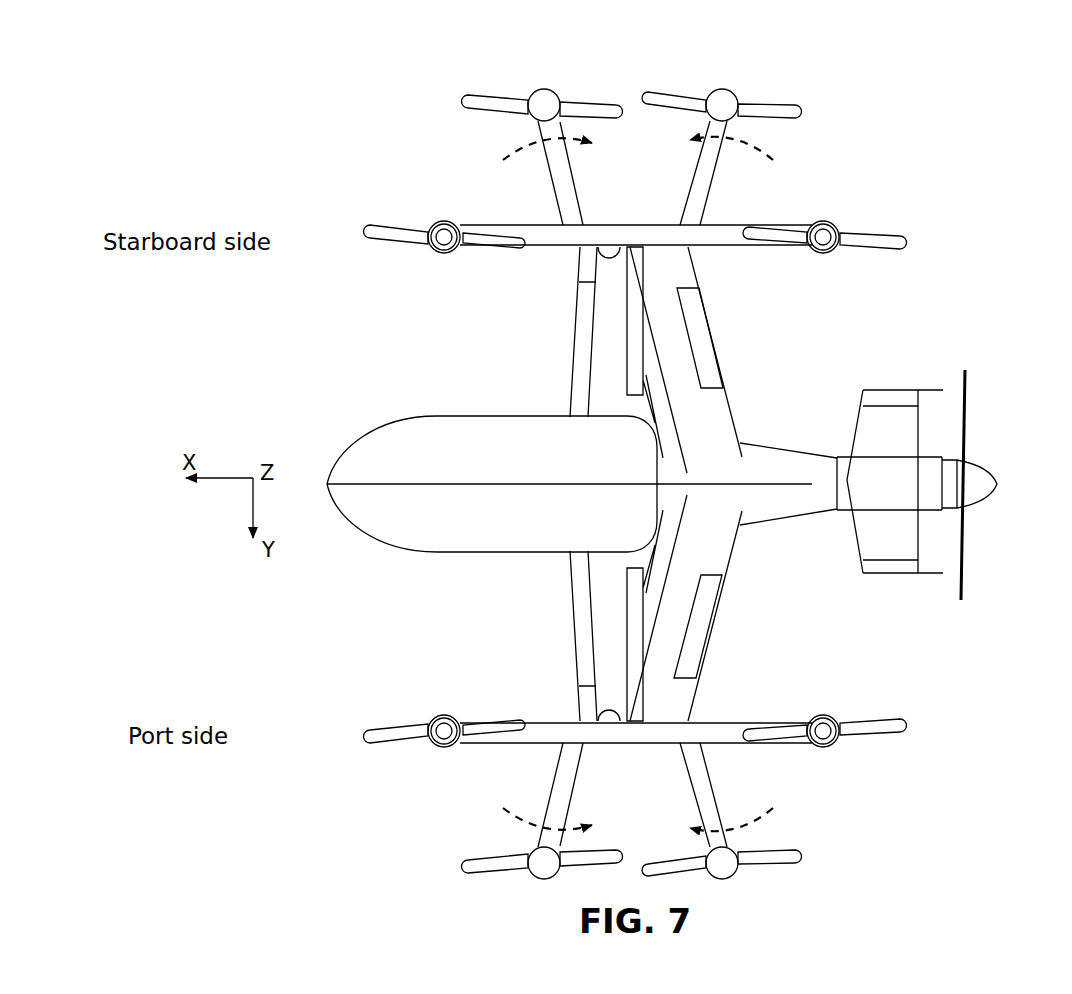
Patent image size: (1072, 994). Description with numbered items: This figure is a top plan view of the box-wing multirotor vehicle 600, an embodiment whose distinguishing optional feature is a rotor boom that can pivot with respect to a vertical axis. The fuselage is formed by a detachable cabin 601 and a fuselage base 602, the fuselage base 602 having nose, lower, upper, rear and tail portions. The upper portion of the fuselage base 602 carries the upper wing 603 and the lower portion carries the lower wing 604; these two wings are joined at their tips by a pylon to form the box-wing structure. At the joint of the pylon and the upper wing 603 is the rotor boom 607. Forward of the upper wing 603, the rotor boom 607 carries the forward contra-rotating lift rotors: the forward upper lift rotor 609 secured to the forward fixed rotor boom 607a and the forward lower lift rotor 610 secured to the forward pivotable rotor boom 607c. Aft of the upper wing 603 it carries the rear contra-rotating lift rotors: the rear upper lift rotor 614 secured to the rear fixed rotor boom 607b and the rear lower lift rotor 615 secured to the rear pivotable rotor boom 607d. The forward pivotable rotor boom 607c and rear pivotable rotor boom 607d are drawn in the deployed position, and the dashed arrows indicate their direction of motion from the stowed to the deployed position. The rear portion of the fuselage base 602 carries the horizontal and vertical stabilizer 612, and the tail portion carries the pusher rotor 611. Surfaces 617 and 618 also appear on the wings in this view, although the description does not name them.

The box-wing multirotor vehicle 600 is at (618, 84).
The detachable cabin 601 is at (362, 440).
The fuselage base 602 is at (765, 428).
The upper wing 603 is at (693, 273).
The lower wing 604 is at (577, 328).
The rotor boom 607 is at (621, 201).
The forward fixed rotor boom 607a is at (533, 238).
The rear fixed rotor boom 607b is at (733, 238).
The forward pivotable rotor boom 607c is at (545, 160).
The rear pivotable rotor boom 607d is at (720, 150).
The forward upper lift rotor 609 is at (380, 240).
The forward lower lift rotor 610 is at (462, 99).
The pusher rotor 611 is at (963, 553).
The horizontal and vertical stabilizer 612 is at (900, 388).
The rear upper lift rotor 614 is at (905, 241).
The rear lower lift rotor 615 is at (800, 110).
The control surface 617 is at (720, 378).
The control surface 618 is at (627, 376).